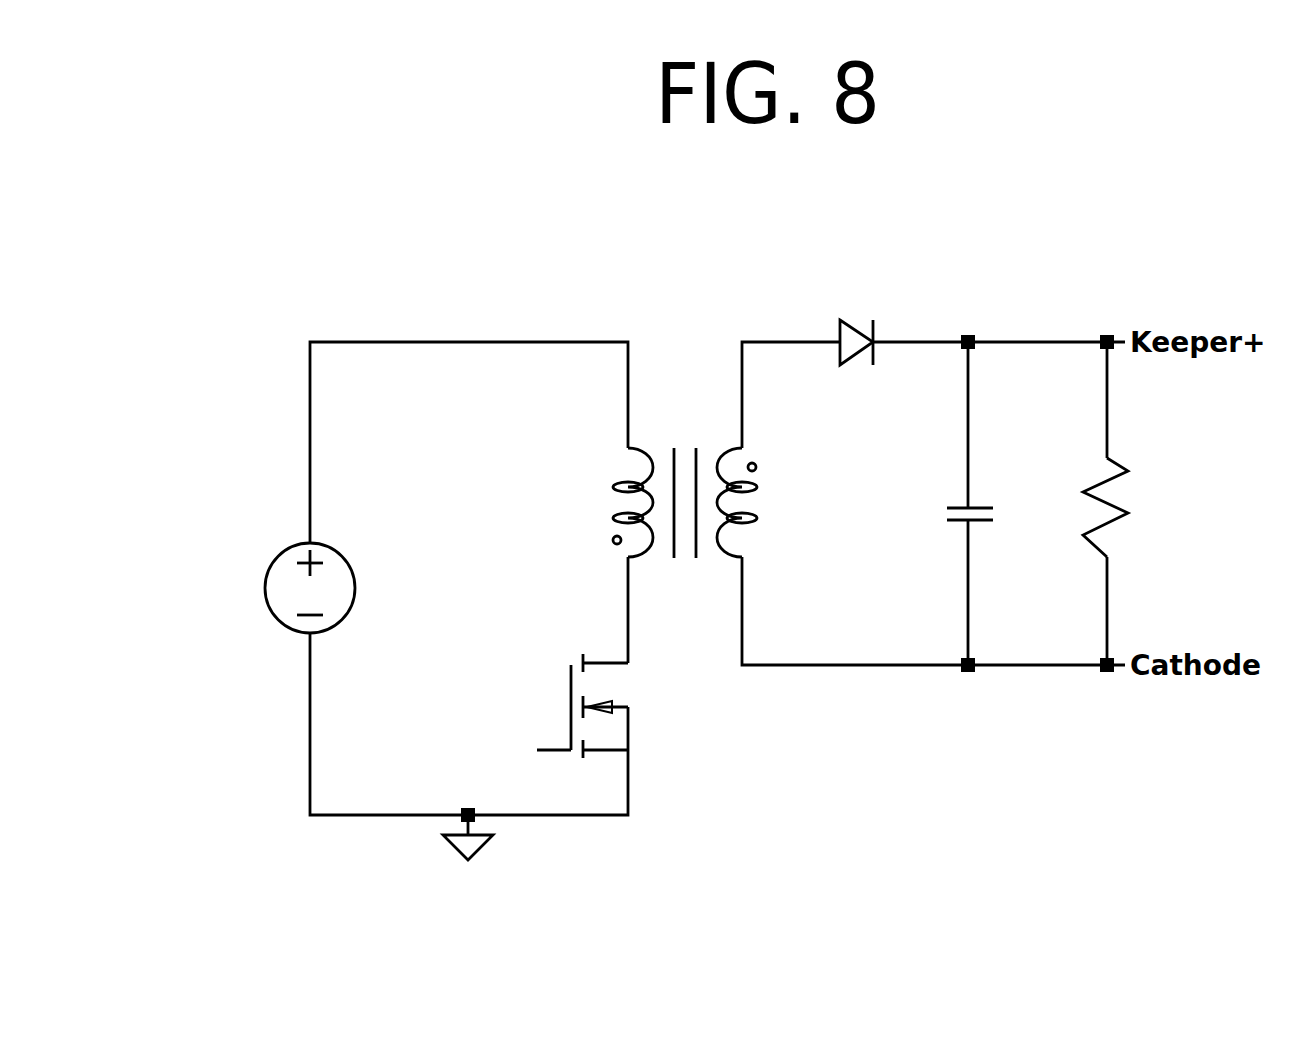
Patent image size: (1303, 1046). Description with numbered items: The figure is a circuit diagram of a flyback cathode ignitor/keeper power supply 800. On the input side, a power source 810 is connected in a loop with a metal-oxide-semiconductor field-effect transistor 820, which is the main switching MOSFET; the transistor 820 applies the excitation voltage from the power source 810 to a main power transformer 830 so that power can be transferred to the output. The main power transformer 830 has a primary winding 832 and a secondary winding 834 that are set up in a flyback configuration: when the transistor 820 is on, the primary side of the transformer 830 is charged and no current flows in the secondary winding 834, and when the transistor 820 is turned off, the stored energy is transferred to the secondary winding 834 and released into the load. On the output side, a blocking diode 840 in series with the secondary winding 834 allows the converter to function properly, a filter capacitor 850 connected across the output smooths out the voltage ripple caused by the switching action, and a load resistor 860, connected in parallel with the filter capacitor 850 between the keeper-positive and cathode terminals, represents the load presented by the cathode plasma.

The flyback cathode ignitor/keeper power supply 800 is at (228, 160).
The power source V1 810 is at (348, 588).
The MOSFET Q1 820 is at (622, 706).
The main power transformer T1 830 is at (685, 489).
The primary winding 832 is at (623, 480).
The secondary winding 834 is at (758, 517).
The blocking diode D1 840 is at (857, 306).
The filter capacitor C1 850 is at (996, 473).
The load R1 860 is at (1144, 506).